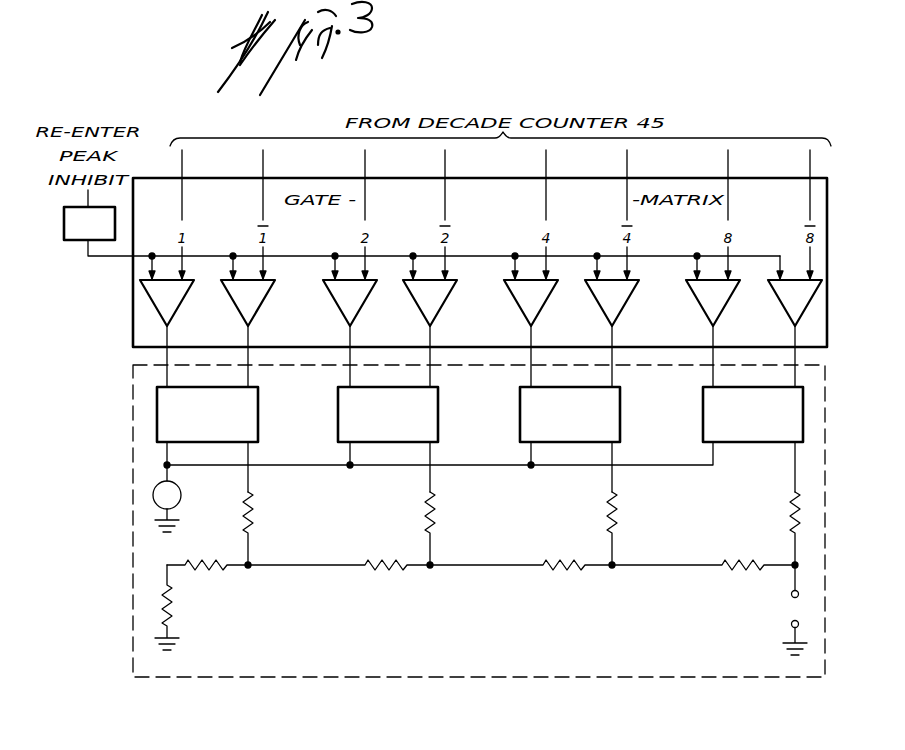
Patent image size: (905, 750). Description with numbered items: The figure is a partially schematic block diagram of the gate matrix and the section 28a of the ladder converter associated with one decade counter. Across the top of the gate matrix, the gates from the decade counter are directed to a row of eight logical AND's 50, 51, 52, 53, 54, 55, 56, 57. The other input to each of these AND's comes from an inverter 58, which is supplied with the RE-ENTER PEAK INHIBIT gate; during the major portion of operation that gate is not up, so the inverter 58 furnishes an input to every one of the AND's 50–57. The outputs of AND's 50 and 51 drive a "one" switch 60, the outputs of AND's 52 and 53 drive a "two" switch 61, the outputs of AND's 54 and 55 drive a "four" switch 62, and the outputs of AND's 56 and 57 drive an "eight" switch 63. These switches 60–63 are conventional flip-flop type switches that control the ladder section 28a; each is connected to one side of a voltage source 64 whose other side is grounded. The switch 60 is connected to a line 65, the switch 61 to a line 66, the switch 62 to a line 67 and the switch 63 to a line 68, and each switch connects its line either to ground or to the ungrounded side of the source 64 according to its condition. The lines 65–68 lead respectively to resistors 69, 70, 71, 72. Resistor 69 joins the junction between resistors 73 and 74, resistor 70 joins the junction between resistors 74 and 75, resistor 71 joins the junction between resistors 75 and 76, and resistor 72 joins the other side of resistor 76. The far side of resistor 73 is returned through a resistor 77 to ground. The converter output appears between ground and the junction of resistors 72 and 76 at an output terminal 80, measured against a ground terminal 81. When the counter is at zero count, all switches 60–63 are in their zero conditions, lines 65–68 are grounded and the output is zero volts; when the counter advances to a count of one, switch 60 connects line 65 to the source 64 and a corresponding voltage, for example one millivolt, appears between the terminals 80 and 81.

The section of ladder converter 28a is at (284, 665).
The logical AND 50 is at (174, 312).
The logical AND 51 is at (234, 298).
The logical AND 52 is at (336, 298).
The logical AND 53 is at (416, 298).
The logical AND 54 is at (517, 298).
The logical AND 55 is at (599, 298).
The logical AND 56 is at (699, 298).
The logical AND 57 is at (780, 298).
The inverter 58 is at (68, 241).
The "1" switch 60 is at (258, 408).
The "2" switch 61 is at (438, 405).
The "4" switch 62 is at (520, 414).
The "8" switch 63 is at (703, 412).
The voltage source 64 is at (181, 495).
The line 65 is at (250, 477).
The line 66 is at (432, 477).
The line 67 is at (614, 477).
The line 68 is at (793, 476).
The resistor 69 is at (255, 511).
The resistor 70 is at (437, 511).
The resistor 71 is at (619, 511).
The resistor 72 is at (788, 515).
The resistor 73 is at (203, 558).
The resistor 74 is at (381, 558).
The resistor 75 is at (565, 558).
The resistor 76 is at (739, 558).
The resistor 77 is at (176, 603).
The output terminal 80 is at (790, 596).
The ground terminal 81 is at (790, 624).